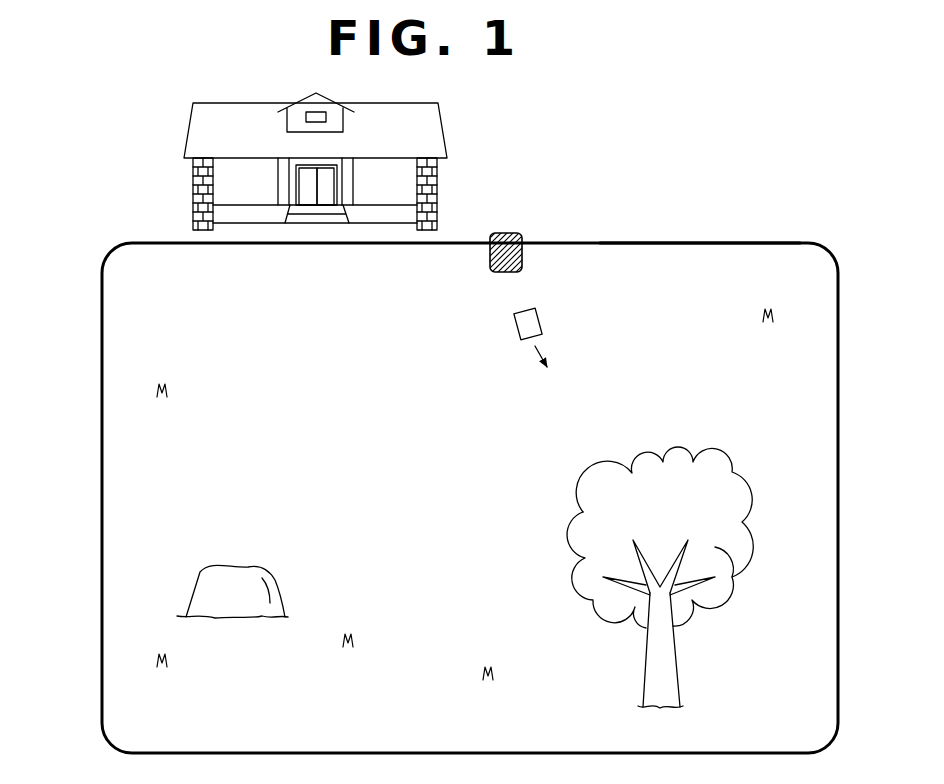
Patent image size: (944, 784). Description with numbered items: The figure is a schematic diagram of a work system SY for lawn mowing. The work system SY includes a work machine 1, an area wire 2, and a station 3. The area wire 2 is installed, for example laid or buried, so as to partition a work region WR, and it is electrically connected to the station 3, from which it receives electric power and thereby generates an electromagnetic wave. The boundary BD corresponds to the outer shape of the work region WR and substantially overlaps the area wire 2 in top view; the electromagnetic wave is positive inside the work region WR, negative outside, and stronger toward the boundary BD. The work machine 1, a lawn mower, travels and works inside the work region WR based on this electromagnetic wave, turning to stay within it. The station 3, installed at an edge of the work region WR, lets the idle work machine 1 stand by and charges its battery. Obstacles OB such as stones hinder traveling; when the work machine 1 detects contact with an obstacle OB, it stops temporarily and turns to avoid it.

The work system SY is at (68, 196).
The work machine 1 is at (513, 321).
The area wire 2 is at (824, 250).
The station 3 is at (510, 232).
The work region WR is at (624, 270).
The boundary BD is at (727, 242).
The obstacle OB is at (279, 575).